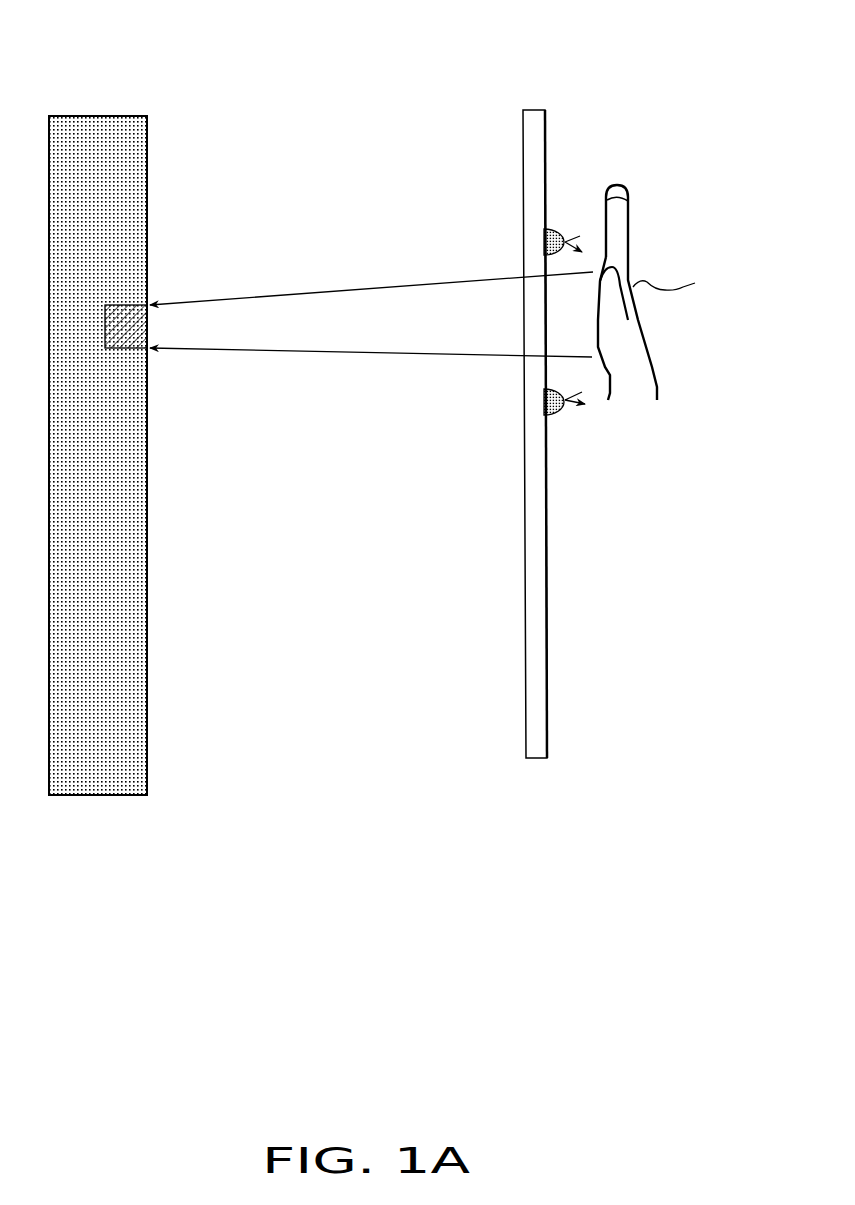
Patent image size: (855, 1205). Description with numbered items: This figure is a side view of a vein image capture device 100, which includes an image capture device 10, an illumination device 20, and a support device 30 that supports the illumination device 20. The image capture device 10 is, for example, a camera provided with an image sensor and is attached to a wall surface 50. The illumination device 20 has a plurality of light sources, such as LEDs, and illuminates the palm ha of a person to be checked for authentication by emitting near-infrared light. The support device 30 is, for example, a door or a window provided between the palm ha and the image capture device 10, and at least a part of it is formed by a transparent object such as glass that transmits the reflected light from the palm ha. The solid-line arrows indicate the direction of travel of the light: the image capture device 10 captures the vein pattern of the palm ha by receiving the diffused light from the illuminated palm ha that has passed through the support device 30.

The vein image capture device 100 is at (471, 63).
The image capture device 10 is at (150, 302).
The illumination device 20 is at (560, 413).
The support device 30 is at (545, 578).
The wall surface 50 is at (148, 582).
The palm ha is at (663, 292).